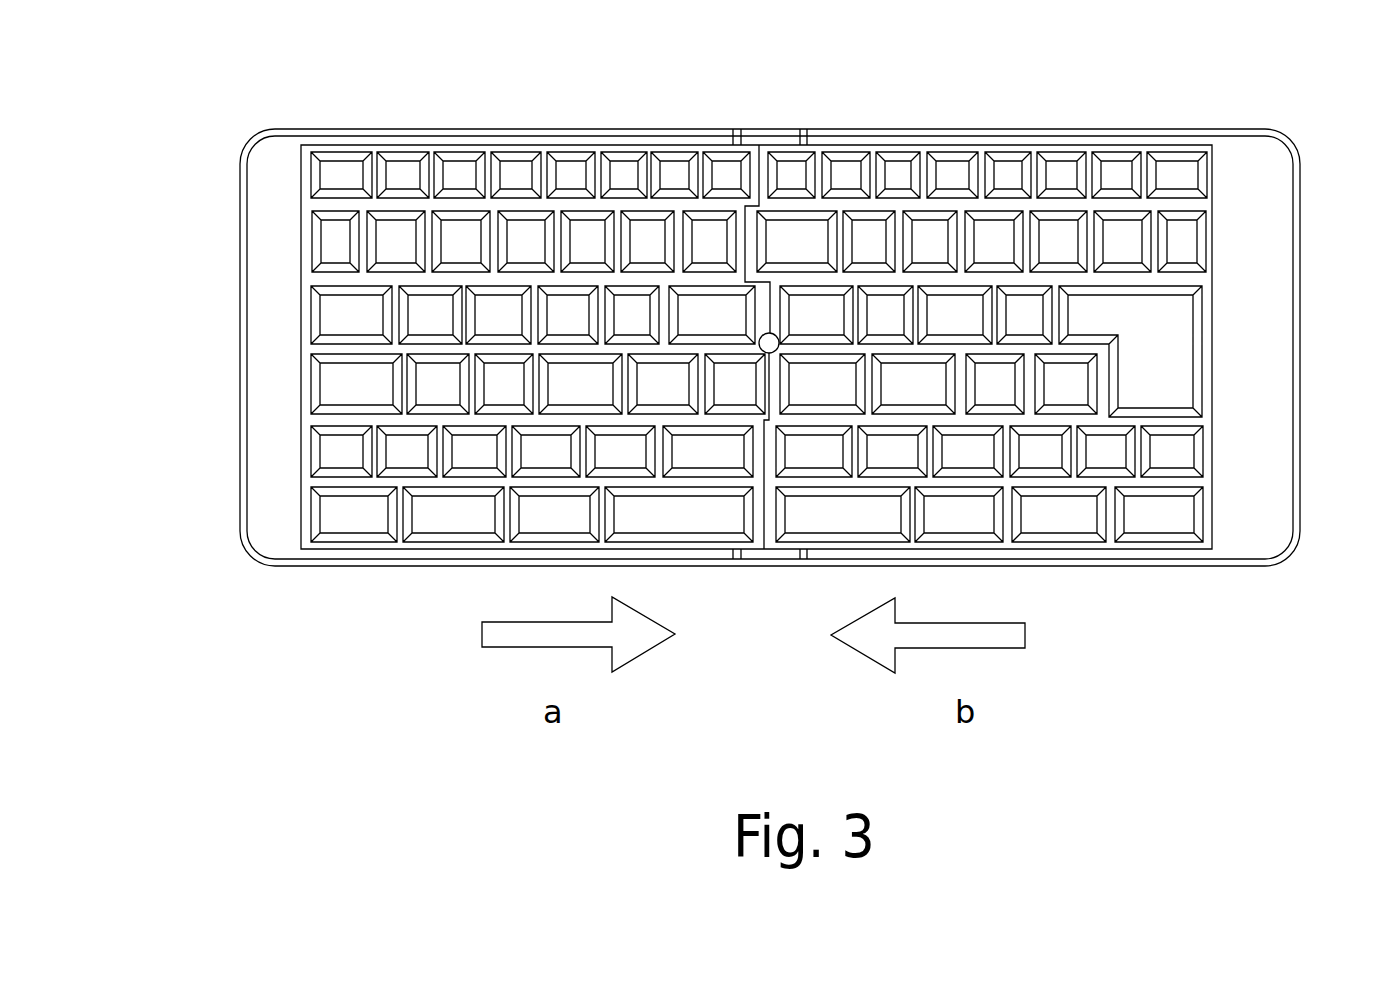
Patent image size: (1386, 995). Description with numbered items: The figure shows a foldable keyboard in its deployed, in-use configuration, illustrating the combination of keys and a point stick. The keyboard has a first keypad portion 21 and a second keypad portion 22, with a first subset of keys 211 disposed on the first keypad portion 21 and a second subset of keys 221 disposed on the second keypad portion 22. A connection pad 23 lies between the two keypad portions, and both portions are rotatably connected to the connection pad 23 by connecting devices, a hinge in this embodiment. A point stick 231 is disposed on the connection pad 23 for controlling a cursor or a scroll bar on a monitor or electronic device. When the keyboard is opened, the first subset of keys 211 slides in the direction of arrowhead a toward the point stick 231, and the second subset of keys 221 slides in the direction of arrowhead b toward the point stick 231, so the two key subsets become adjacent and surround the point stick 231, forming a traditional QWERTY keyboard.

The first keypad portion 21 is at (456, 288).
The second keypad portion 22 is at (1066, 311).
The connection pad 23 is at (770, 138).
The point stick 231 is at (774, 334).
The first subset of keys 211 is at (513, 177).
The second subset of keys 221 is at (1063, 180).